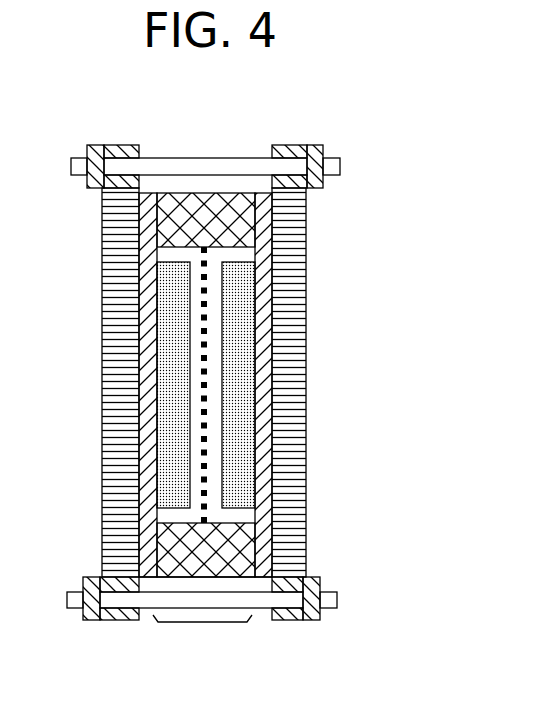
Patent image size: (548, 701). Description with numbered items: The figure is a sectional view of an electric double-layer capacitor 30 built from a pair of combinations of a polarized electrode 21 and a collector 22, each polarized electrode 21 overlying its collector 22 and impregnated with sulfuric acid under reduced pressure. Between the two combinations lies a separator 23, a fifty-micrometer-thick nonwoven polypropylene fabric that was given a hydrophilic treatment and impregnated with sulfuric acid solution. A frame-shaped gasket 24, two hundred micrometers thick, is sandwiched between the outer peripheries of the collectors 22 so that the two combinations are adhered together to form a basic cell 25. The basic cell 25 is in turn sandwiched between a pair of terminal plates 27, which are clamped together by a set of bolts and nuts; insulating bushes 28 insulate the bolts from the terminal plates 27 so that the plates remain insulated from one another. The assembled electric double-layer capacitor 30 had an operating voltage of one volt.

The electric double-layer capacitor 30 is at (409, 111).
The polarized electrode 21 is at (167, 285).
The collector 22 is at (148, 335).
The separator 23 is at (200, 506).
The gasket 24 is at (233, 193).
The basic cell 25 is at (203, 622).
The terminal plate 27 is at (300, 297).
The insulating bush 28 is at (320, 580).